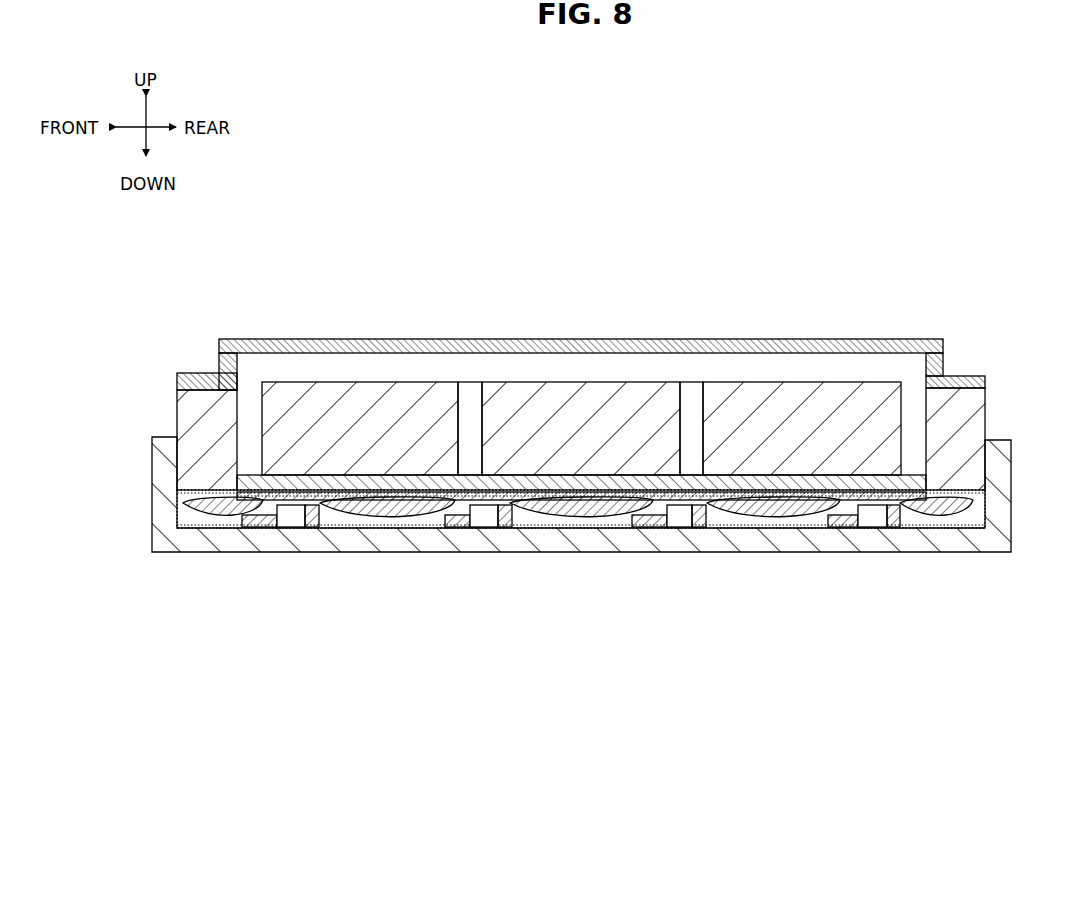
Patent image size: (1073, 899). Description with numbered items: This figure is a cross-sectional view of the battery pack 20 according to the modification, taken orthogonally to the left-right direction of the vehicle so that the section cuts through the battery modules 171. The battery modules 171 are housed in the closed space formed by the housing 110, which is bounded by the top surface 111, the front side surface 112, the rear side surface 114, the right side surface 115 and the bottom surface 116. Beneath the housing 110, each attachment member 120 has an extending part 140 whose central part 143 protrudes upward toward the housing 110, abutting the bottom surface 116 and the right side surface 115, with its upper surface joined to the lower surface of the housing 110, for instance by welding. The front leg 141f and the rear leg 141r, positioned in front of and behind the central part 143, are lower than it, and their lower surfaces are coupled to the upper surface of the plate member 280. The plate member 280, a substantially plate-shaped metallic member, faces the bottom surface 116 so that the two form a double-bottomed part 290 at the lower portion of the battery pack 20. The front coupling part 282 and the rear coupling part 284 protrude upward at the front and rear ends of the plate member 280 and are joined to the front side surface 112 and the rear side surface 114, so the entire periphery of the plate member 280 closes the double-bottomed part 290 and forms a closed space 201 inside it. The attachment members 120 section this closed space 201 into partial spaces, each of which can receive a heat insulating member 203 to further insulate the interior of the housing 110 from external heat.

The battery pack 20 is at (839, 114).
The housing 110 is at (937, 328).
The top surface 111 is at (398, 339).
The front side surface 112 is at (190, 421).
The rear side surface 114 is at (972, 420).
The right side surface 115 is at (472, 398).
The bottom surface 116 is at (608, 500).
The attachment member 120 is at (285, 606).
The extending part 140 is at (232, 522).
The front leg 141f is at (262, 530).
The rear leg 141r is at (348, 528).
The central part 143 is at (300, 530).
The battery module 171 is at (738, 410).
The closed space 201 is at (742, 528).
The heat insulating member 203 is at (808, 530).
The plate member 280 is at (606, 490).
The front coupling part 282 is at (182, 491).
The rear coupling part 284 is at (1000, 493).
The double-bottomed part 290 is at (626, 600).